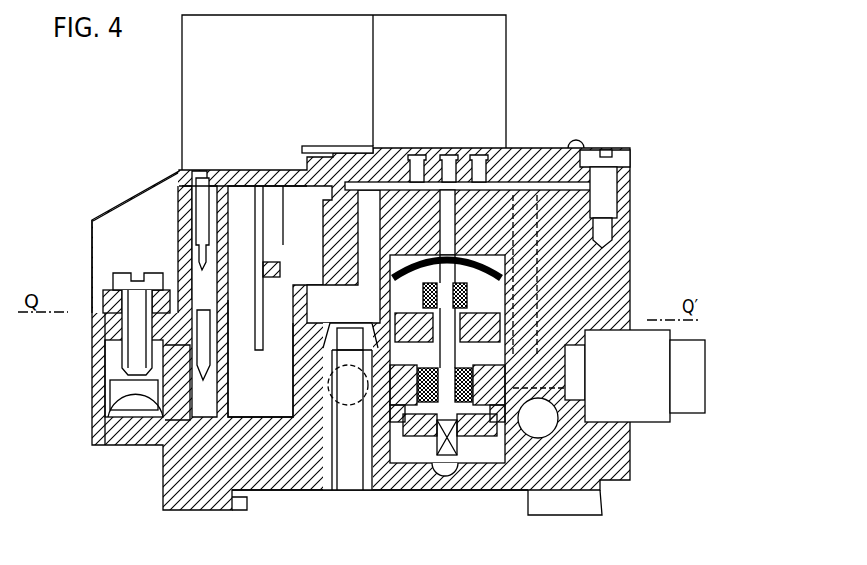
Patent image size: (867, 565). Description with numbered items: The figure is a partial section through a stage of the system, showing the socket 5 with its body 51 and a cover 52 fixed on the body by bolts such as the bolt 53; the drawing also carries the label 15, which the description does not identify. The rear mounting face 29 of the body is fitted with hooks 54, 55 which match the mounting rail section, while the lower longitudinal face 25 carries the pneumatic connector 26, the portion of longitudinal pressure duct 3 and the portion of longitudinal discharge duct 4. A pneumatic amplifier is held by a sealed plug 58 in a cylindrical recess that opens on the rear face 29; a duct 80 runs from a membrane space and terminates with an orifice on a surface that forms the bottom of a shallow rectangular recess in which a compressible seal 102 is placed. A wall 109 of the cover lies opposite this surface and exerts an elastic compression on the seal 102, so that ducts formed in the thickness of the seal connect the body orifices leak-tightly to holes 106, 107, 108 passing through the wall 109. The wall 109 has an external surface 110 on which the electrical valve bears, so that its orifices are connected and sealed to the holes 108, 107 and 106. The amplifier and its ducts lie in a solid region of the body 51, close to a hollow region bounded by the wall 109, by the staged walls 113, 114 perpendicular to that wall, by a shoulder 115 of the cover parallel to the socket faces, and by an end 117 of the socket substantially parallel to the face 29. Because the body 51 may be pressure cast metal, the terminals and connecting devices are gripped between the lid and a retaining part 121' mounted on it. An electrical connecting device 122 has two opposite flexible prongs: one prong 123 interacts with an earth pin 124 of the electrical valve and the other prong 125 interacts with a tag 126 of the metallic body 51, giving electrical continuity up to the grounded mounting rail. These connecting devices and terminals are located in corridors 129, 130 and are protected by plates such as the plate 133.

The portion of longitudinal pressure duct 3 is at (545, 432).
The portion of longitudinal discharge duct 4 is at (372, 400).
The socket 5 is at (676, 195).
The bolt 15 is at (113, 282).
The lower longitudinal face 25 is at (631, 460).
The pneumatic connector 26 is at (697, 383).
The rear mounting face 29 is at (305, 491).
The body 51 is at (620, 242).
The cover 52 is at (633, 180).
The bolt 53 is at (633, 157).
The hook 54 is at (243, 507).
The hook 55 is at (523, 515).
The sealed plug 58 is at (407, 490).
The duct 80 is at (440, 233).
The compressible seal 102 is at (508, 190).
The hole 106 is at (416, 172).
The hole 107 is at (450, 172).
The hole 108 is at (480, 172).
The wall 109 is at (275, 185).
The external surface 110 is at (578, 149).
The staged wall 113 is at (178, 238).
The staged wall 114 is at (98, 355).
The shoulder 115 is at (300, 200).
The end 117 is at (105, 400).
The retaining part 121' is at (260, 358).
The electrical connecting device 122 is at (185, 268).
The flexible prong 123 is at (199, 180).
The earth pin 124 is at (212, 178).
The flexible prong 125 is at (142, 445).
The tag 126 is at (190, 428).
The corridor 129 is at (197, 277).
The corridor 130 is at (258, 188).
The plate 133 is at (123, 213).